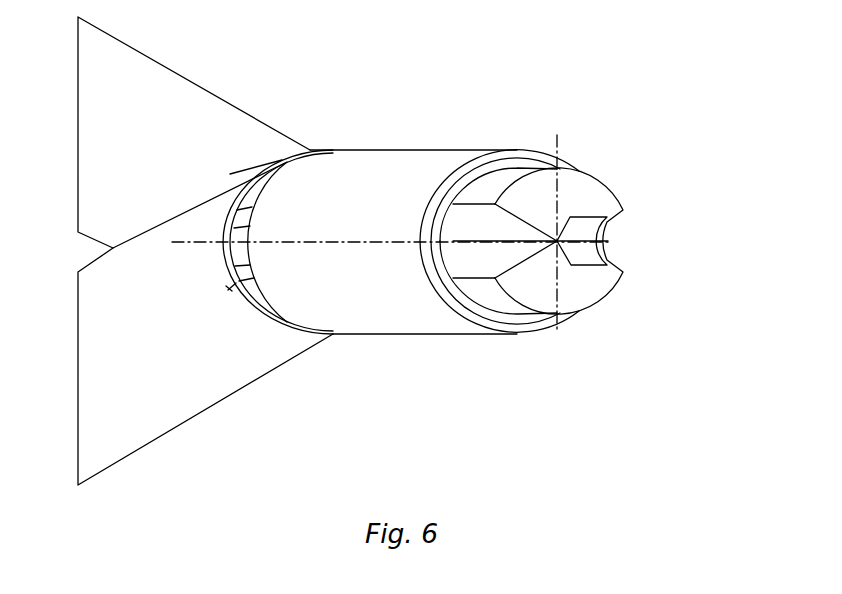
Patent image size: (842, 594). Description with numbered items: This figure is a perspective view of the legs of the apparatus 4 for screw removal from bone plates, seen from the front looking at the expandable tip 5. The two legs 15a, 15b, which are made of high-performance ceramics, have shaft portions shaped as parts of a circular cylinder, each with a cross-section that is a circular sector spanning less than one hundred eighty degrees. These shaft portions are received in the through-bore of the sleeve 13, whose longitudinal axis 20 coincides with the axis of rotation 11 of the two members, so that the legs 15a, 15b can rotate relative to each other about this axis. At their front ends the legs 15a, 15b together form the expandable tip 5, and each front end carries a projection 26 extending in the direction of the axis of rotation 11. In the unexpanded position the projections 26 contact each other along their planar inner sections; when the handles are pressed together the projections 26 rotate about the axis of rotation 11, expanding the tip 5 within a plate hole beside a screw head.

The apparatus 4 is at (362, 82).
The sleeve 13 is at (435, 323).
The leg 15a is at (522, 195).
The leg 15b is at (540, 283).
The expandable tip 5 is at (605, 200).
The axis of rotation 11 is at (537, 171).
The longitudinal axis 20 is at (558, 238).
The projection 26 is at (580, 228).